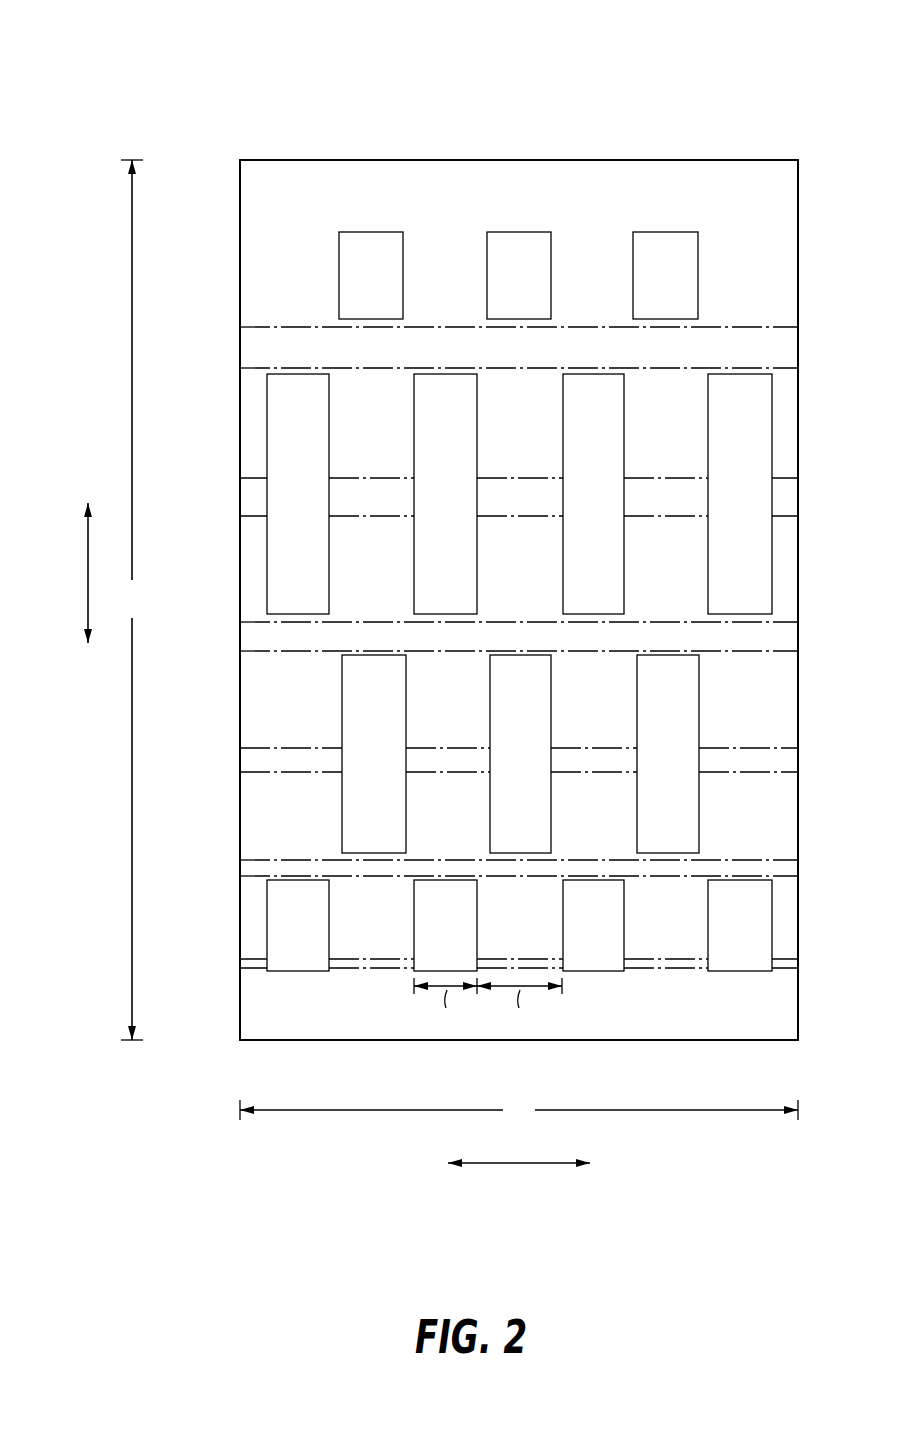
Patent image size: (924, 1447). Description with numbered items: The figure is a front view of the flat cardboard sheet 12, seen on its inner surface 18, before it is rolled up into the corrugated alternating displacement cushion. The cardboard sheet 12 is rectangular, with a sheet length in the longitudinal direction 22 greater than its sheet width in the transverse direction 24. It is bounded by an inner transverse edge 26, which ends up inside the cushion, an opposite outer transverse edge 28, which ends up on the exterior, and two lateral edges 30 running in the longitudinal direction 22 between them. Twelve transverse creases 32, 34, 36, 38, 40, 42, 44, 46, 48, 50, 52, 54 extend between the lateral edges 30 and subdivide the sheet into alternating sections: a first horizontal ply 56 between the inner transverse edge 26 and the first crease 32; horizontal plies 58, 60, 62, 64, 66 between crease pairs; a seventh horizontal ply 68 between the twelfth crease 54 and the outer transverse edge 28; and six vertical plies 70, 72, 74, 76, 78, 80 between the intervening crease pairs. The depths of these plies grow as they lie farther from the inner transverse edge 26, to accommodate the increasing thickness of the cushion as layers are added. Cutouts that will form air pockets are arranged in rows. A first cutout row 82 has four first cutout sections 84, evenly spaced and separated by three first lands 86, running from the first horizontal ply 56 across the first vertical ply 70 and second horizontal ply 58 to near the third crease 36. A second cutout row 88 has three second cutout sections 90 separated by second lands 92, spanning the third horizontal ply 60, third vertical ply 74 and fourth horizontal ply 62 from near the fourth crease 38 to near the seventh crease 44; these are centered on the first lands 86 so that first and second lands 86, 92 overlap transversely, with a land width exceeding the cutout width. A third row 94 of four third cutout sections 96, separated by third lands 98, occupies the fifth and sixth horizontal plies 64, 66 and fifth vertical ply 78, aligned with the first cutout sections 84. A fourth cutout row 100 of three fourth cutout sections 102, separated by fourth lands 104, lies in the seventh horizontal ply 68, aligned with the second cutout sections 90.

The cardboard sheet 12 is at (213, 60).
The inner surface 18 is at (308, 1017).
The longitudinal direction 22 is at (86, 577).
The transverse direction 24 is at (517, 1165).
The inner transverse edge 26 is at (600, 1040).
The outer transverse edge 28 is at (640, 158).
The lateral edges 30 is at (240, 187).
The first crease 32 is at (785, 971).
The second crease 34 is at (778, 959).
The third crease 36 is at (778, 876).
The fourth crease 38 is at (778, 860).
The fifth crease 40 is at (778, 772).
The sixth crease 42 is at (778, 748).
The seventh crease 44 is at (778, 651).
The eighth crease 46 is at (778, 622).
The ninth crease 48 is at (778, 516).
The tenth crease 50 is at (778, 478).
The eleventh crease 52 is at (778, 368).
The twelfth crease 54 is at (778, 327).
The first horizontal ply 56 is at (788, 1020).
The second horizontal ply 58 is at (787, 920).
The third horizontal ply 60 is at (796, 806).
The fourth horizontal ply 62 is at (787, 700).
The fifth horizontal ply 64 is at (787, 573).
The sixth horizontal ply 66 is at (787, 427).
The seventh horizontal ply 68 is at (773, 258).
The first vertical ply 70 is at (250, 967).
The second vertical ply 72 is at (250, 867).
The third vertical ply 74 is at (250, 763).
The fourth vertical ply 76 is at (250, 640).
The fifth vertical ply 78 is at (250, 500).
The sixth vertical ply 80 is at (250, 349).
The first cutout row 82 is at (467, 925).
The first cutout sections 84 is at (329, 929).
The first lands 86 is at (376, 932).
The second cutout row 88 is at (480, 754).
The second cutout sections 90 is at (406, 741).
The second lands 92 is at (308, 723).
The third row 94 is at (467, 494).
The third cutout sections 96 is at (329, 497).
The third lands 98 is at (376, 435).
The fourth cutout row 100 is at (475, 275).
The fourth cutout sections 102 is at (403, 276).
The fourth lands 104 is at (313, 280).